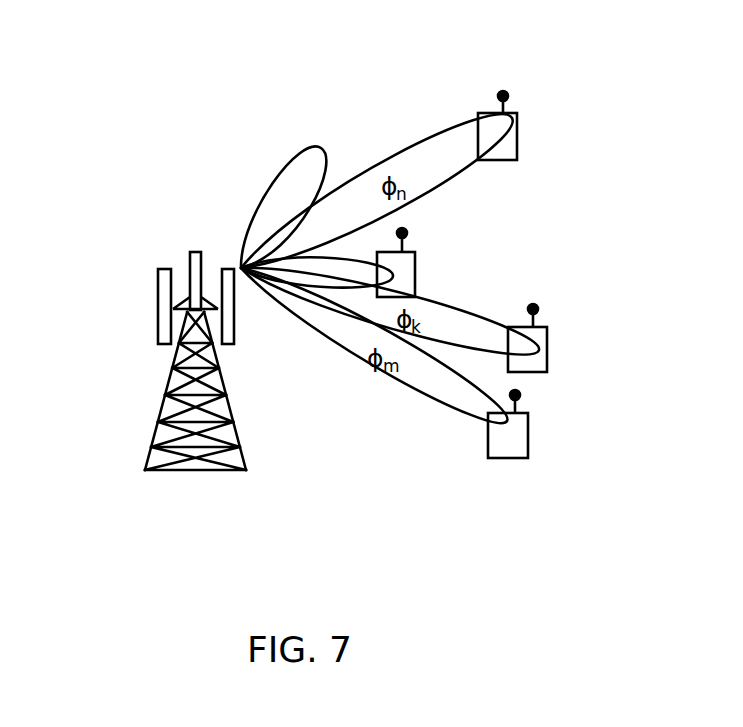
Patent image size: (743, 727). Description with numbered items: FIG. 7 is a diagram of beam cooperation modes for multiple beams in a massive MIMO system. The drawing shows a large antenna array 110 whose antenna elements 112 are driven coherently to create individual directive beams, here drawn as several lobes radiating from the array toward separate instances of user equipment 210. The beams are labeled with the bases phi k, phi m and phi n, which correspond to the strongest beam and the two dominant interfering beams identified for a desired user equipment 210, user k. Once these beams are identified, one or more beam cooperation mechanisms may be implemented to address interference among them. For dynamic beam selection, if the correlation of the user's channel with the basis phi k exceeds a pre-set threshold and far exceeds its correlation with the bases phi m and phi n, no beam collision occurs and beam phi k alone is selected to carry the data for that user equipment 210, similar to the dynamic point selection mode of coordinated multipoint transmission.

The large antenna array 110 is at (160, 410).
The antenna elements 112 is at (158, 285).
The user equipment (UE) 210 is at (517, 118).